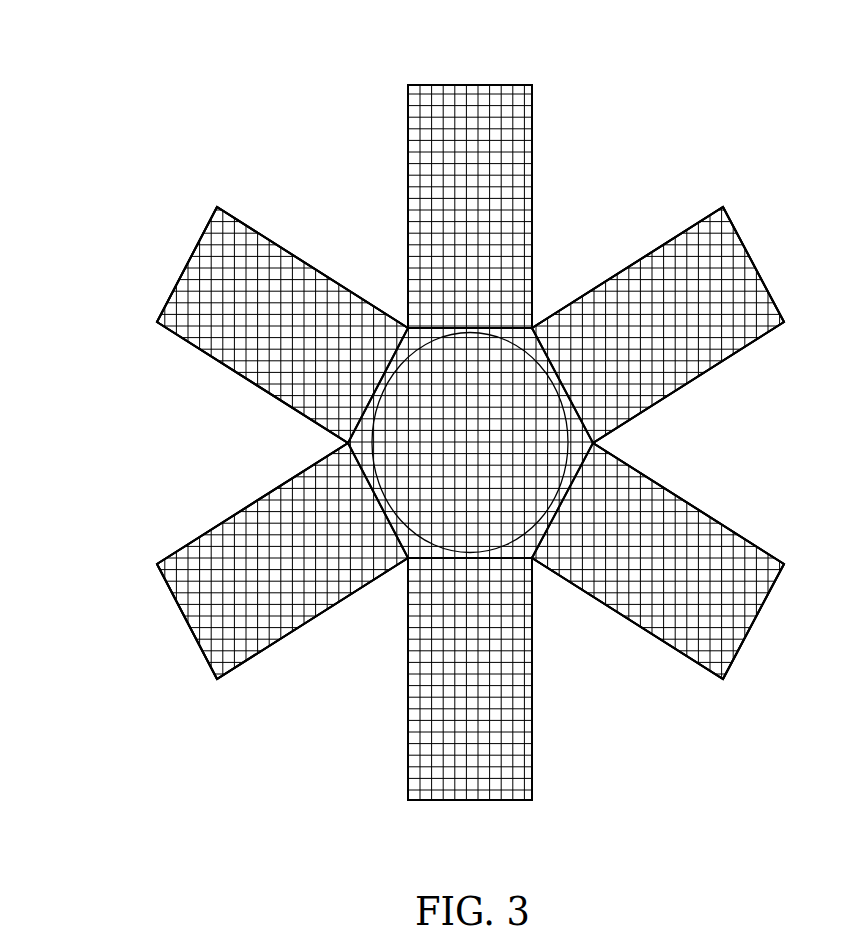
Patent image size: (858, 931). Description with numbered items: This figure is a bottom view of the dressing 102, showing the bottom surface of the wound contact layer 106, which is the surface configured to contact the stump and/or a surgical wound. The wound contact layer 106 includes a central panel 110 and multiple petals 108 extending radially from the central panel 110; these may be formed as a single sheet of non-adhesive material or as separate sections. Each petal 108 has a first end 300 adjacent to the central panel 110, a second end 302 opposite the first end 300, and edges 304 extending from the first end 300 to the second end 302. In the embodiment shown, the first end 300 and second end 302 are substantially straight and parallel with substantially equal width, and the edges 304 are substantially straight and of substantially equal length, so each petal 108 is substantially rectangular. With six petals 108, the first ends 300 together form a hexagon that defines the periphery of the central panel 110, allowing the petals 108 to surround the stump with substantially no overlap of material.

The dressing 102 is at (232, 55).
The wound contact layer 106 is at (106, 401).
The petal 108 is at (495, 113).
The central panel 110 is at (495, 352).
The first end 300 is at (445, 327).
The second end 302 is at (438, 84).
The edges 304 is at (408, 177).